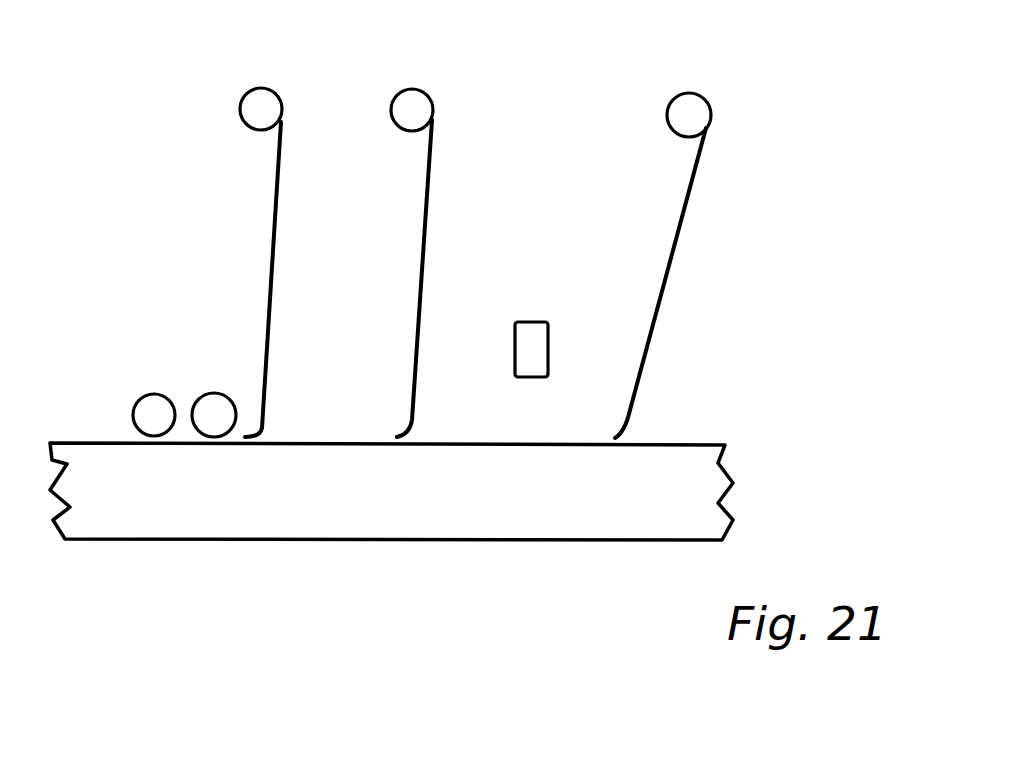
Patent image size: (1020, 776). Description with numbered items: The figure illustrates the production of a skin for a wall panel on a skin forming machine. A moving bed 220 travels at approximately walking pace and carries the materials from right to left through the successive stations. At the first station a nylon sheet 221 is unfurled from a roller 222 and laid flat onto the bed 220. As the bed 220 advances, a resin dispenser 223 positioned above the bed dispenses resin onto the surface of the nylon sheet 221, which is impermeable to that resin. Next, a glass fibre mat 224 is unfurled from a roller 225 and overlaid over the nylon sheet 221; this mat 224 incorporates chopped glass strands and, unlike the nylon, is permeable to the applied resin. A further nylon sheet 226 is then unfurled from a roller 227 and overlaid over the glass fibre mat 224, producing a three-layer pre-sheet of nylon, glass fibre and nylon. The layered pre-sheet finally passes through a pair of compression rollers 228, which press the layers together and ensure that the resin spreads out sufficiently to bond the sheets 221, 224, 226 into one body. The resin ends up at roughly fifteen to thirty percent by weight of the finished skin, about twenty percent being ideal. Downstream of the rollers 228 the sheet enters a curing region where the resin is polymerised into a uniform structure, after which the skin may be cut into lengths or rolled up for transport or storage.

The moving bed 220 is at (598, 502).
The nylon sheet 221 is at (690, 212).
The roller 222 is at (688, 102).
The resin dispenser 223 is at (532, 326).
The glass fibre mat 224 is at (430, 221).
The roller 225 is at (420, 100).
The further nylon sheet 226 is at (278, 212).
The roller 227 is at (265, 102).
The compression rollers 228 is at (210, 408).